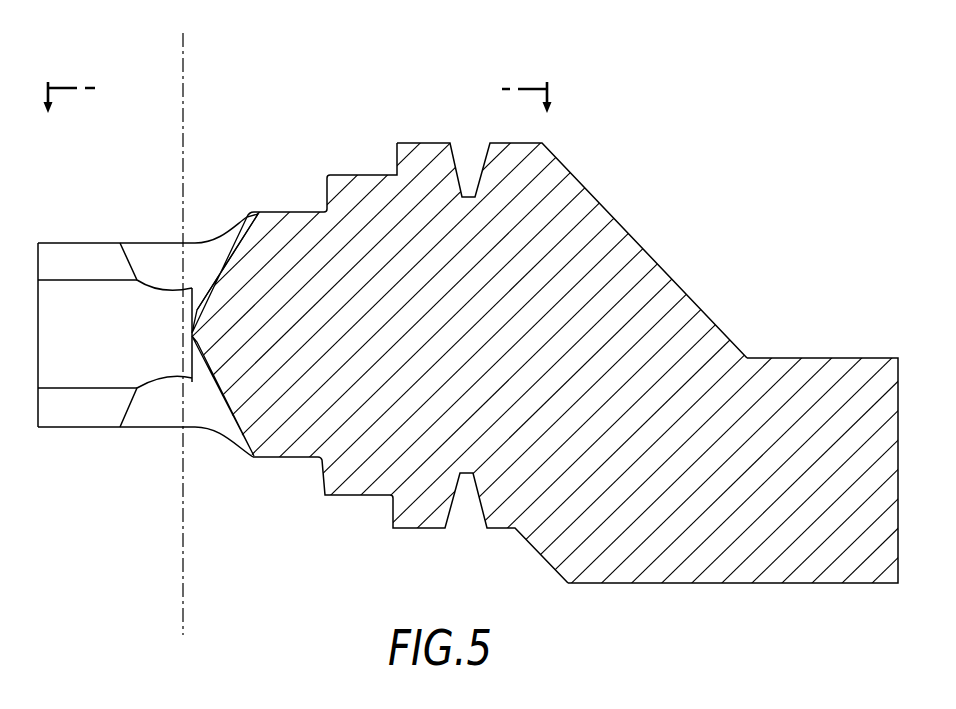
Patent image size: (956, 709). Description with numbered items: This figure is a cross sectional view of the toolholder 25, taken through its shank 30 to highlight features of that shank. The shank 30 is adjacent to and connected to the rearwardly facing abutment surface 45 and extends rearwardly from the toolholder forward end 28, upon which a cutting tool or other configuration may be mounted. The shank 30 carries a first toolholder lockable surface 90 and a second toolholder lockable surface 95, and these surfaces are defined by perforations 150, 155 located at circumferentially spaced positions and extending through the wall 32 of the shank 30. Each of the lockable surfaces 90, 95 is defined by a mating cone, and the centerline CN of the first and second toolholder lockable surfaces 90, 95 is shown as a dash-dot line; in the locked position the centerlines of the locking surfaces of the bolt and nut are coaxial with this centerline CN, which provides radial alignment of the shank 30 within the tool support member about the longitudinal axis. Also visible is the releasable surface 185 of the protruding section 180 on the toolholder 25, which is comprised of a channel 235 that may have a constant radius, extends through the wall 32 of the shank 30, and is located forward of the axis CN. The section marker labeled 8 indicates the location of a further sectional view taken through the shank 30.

The toolholder 25 is at (668, 153).
The toolholder forward end 28 is at (838, 362).
The shank 30 is at (38, 253).
The wall 32 is at (47, 268).
The rearwardly facing abutment surface 45 is at (323, 183).
The first toolholder lockable surface 90 is at (133, 250).
The second toolholder lockable surface 95 is at (130, 408).
The perforation 150 is at (206, 248).
The perforation 155 is at (203, 415).
The protruding section 180 is at (195, 333).
The releasable surface 185 is at (197, 302).
The channel 235 is at (245, 216).
The centerline CN is at (185, 66).
The section line 8- 8 is at (297, 77).